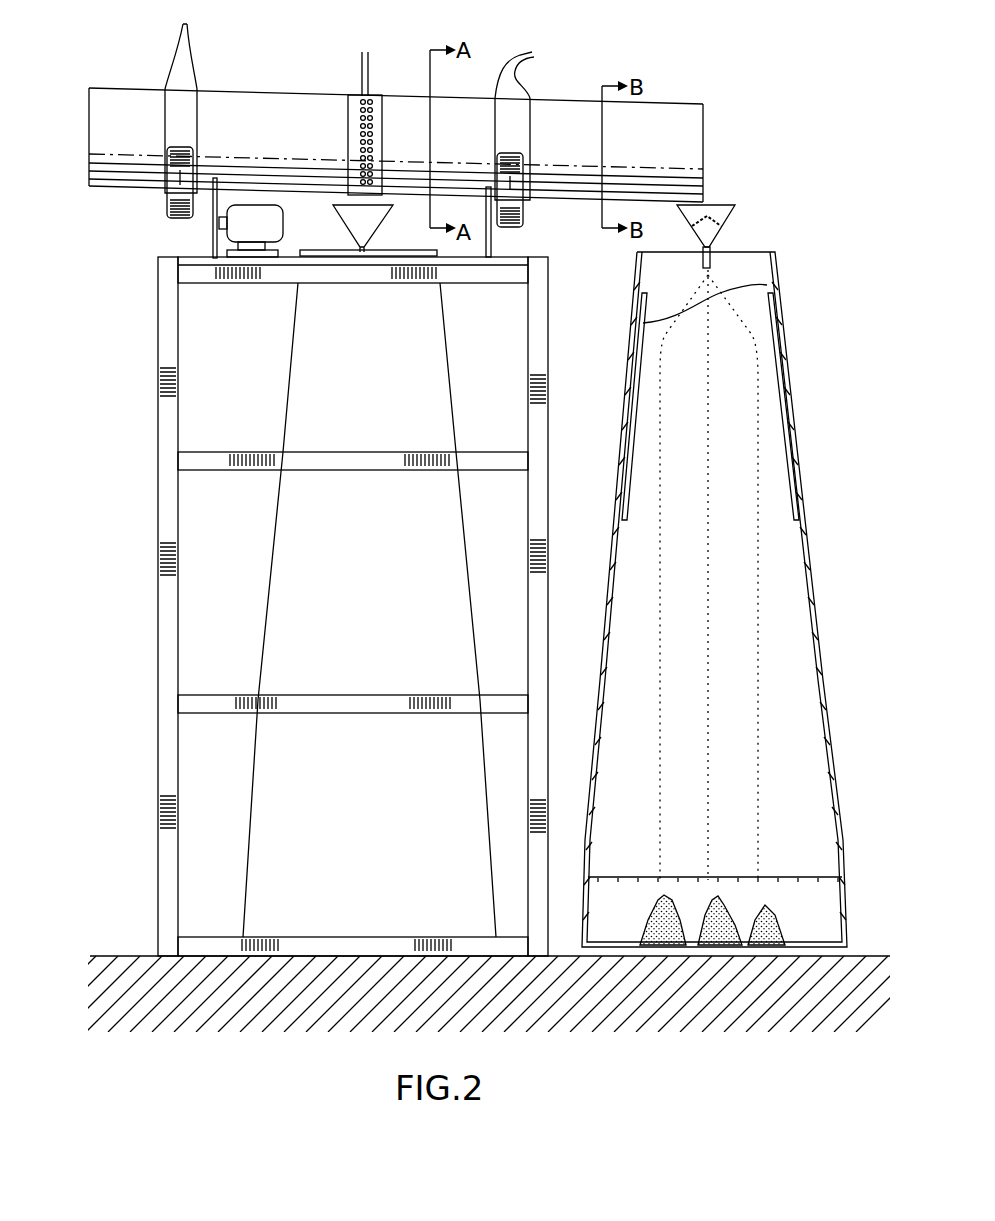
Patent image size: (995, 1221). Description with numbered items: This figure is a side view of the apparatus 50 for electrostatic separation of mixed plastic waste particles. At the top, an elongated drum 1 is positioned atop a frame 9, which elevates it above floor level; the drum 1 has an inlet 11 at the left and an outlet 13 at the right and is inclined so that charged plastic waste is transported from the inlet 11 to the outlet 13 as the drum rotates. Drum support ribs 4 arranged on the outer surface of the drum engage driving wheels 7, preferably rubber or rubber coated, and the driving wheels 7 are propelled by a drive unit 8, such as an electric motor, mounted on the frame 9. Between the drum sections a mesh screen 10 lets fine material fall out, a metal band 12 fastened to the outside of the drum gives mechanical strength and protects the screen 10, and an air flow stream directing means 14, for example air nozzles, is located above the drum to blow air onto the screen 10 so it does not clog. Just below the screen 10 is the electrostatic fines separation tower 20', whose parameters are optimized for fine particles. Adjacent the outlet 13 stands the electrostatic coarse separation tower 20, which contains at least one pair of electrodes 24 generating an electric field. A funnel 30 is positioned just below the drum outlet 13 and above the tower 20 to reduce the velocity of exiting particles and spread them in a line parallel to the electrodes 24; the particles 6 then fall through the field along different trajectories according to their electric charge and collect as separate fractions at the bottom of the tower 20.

The drum 1 is at (272, 95).
The drum support ribs 4 is at (358, 100).
The particles 6 is at (718, 633).
The driving wheel 7 is at (180, 190).
The drive unit 8 is at (242, 227).
The frame 9 is at (148, 578).
The mesh screen 10 is at (373, 128).
The inlet 11 is at (76, 130).
The metal band 12 is at (380, 96).
The outlet 13 is at (722, 124).
The air flow stream directing means 14 is at (360, 60).
The electrostatic coarse separation tower 20 is at (734, 599).
The electrostatic fines separation tower 20' is at (298, 610).
The electrodes 24 is at (768, 318).
The funnel 30 is at (735, 220).
The apparatus 50 is at (786, 103).